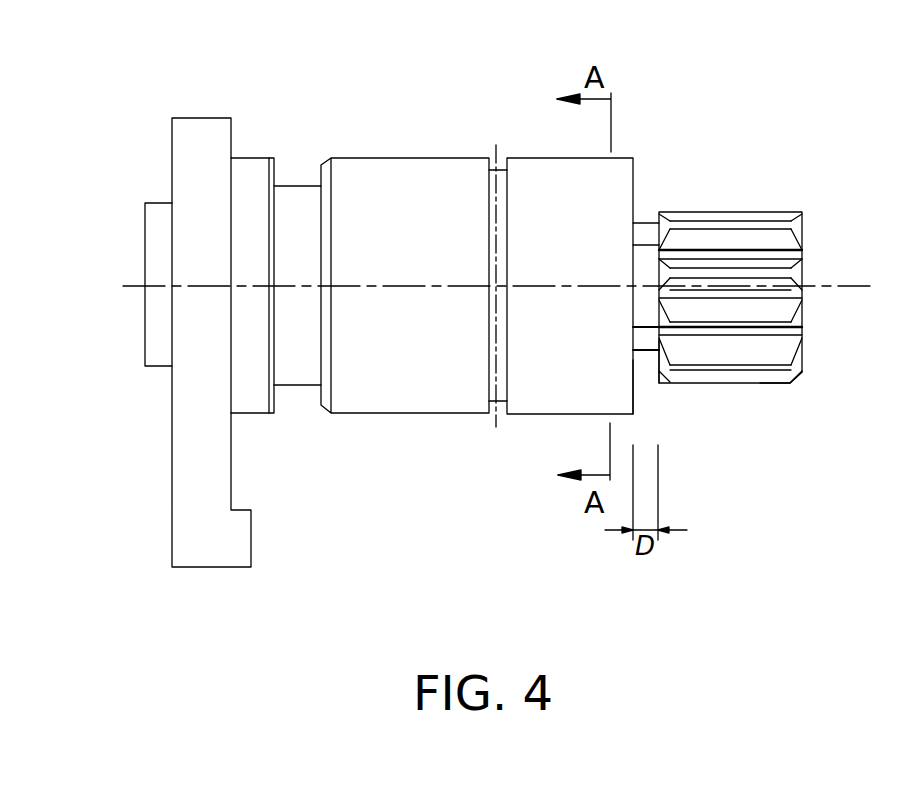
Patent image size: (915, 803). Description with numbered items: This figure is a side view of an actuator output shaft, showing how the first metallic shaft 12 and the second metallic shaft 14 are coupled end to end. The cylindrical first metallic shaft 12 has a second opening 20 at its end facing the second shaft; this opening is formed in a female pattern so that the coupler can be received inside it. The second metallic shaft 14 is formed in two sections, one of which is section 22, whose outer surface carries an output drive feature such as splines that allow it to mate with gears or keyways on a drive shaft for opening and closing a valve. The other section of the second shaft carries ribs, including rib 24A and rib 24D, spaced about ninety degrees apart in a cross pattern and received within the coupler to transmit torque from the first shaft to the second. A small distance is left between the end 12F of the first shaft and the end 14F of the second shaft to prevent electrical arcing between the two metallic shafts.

The first metallic shaft 12 is at (445, 158).
The end of shaft 12 12F is at (640, 415).
The second metallic shaft 14 is at (775, 212).
The end of shaft 14 14F is at (652, 373).
The second opening 20 is at (633, 177).
The section of shaft 14 22 is at (772, 387).
The rib 24A is at (657, 212).
The rib 24D is at (645, 326).